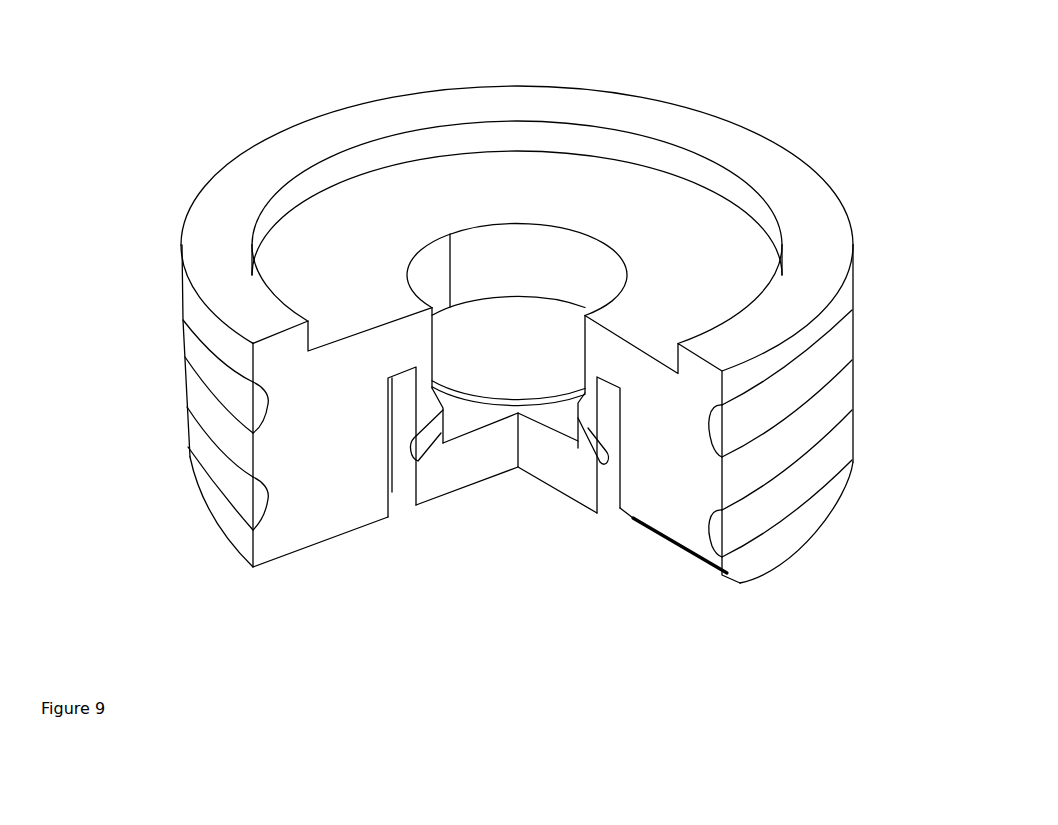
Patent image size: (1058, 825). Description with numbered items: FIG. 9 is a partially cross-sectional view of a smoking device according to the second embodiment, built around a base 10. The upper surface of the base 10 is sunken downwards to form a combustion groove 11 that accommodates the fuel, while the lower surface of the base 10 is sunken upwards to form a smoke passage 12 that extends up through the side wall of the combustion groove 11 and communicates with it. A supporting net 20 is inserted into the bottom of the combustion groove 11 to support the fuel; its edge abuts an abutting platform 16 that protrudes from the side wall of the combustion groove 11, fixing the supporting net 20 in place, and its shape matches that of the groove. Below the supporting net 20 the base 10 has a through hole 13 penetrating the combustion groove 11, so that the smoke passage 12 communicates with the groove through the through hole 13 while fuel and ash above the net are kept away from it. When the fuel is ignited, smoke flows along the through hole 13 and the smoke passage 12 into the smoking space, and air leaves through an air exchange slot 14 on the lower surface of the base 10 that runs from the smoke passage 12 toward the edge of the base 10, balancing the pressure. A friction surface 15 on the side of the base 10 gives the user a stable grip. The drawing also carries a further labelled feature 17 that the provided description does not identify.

The base 10 is at (786, 121).
The combustion groove 11 is at (513, 237).
The smoke passage 12 is at (386, 493).
The through hole 13 is at (594, 450).
The air exchange slot 14 is at (790, 553).
The friction surface 15 is at (776, 409).
The abutting platform 16 is at (438, 403).
The annular top rim 17 is at (281, 204).
The supporting net 20 is at (511, 322).